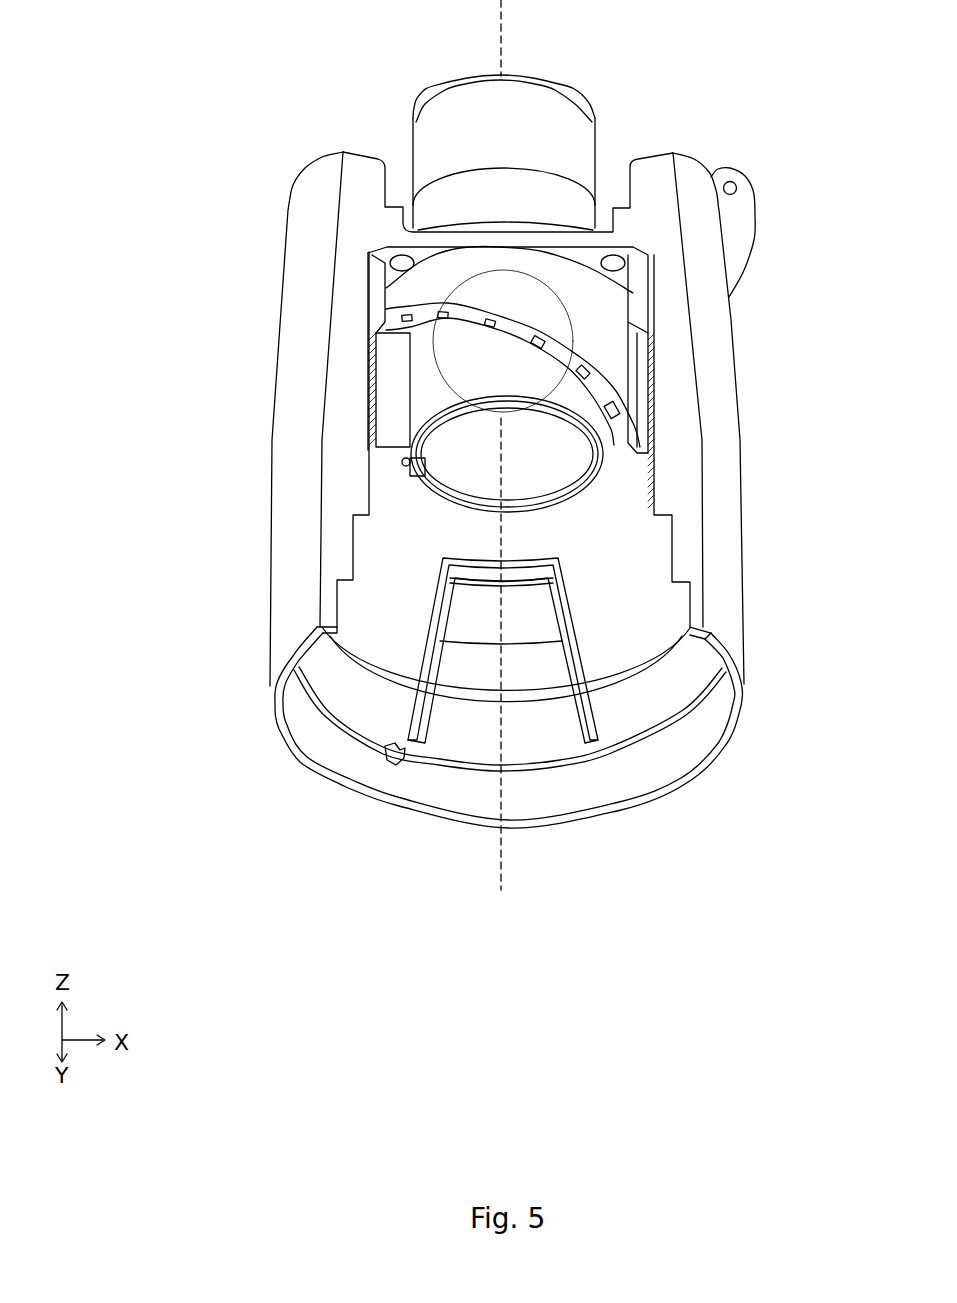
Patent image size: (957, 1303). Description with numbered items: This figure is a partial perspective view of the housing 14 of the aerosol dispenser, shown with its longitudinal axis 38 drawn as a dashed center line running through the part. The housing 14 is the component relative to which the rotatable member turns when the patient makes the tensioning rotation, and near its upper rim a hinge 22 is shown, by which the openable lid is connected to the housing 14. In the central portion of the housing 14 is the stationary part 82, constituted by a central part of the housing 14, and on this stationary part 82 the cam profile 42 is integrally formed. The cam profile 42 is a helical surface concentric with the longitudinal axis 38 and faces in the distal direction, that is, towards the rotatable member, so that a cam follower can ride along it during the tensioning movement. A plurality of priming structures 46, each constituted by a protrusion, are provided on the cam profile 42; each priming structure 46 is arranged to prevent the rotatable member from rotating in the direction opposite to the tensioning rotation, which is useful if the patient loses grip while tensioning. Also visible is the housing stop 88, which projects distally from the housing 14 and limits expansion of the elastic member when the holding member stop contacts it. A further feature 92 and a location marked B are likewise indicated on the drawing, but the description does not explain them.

The housing 14 is at (216, 138).
The hinge 22 is at (737, 188).
The longitudinal axis 38 is at (503, 14).
The cam profile 42 is at (517, 334).
The priming structure 46 is at (585, 369).
The stationary part 82 is at (410, 298).
The housing stop 88 is at (572, 488).
The circular recess 92 is at (532, 331).
The reference point B is at (557, 390).